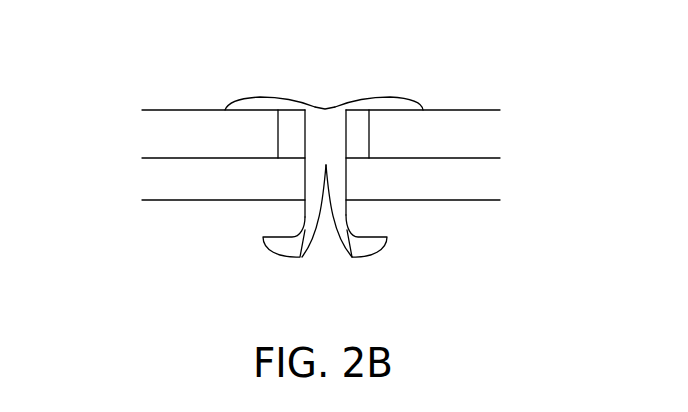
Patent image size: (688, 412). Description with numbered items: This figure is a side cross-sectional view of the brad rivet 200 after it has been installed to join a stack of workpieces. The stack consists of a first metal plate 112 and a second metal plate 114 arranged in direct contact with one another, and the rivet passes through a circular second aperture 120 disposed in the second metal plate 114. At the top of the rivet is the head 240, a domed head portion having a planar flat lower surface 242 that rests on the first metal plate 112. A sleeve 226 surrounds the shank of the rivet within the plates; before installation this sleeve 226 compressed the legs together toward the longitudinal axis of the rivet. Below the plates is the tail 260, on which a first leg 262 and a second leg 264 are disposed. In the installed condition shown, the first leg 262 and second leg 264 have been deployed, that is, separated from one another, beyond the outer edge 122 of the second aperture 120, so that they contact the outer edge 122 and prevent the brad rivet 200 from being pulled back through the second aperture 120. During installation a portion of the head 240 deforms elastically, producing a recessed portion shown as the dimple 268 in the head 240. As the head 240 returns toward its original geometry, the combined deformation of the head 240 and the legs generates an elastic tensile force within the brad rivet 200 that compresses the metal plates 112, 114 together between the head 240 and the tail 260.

The brad rivet 200 is at (208, 53).
The first metal plate 112 is at (153, 132).
The second metal plate 114 is at (153, 182).
The second aperture 120 is at (347, 168).
The outer edge 122 is at (350, 199).
The sleeve 226 is at (360, 130).
The head 240 is at (395, 93).
The flat lower surface 242 is at (255, 110).
The tail 260 is at (329, 253).
The first leg 262 is at (300, 257).
The second leg 264 is at (355, 257).
The dimple 268 is at (325, 108).